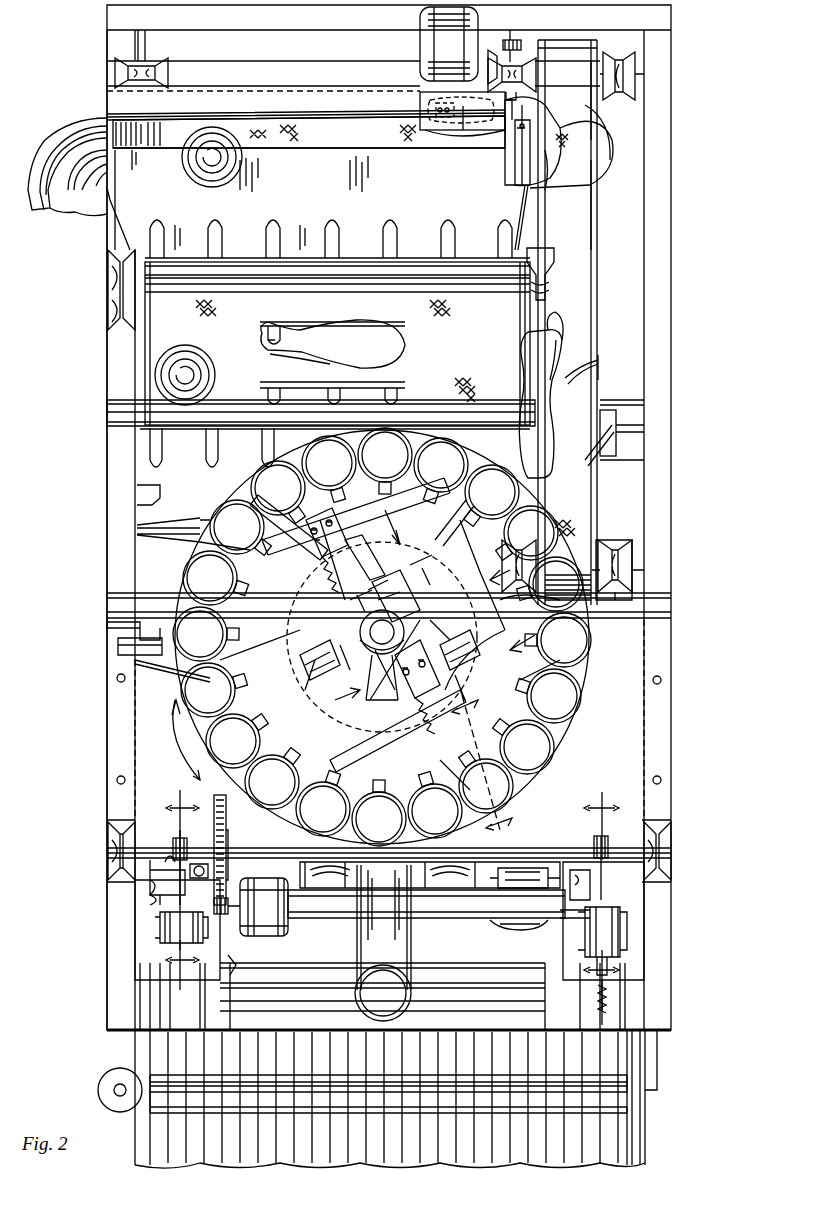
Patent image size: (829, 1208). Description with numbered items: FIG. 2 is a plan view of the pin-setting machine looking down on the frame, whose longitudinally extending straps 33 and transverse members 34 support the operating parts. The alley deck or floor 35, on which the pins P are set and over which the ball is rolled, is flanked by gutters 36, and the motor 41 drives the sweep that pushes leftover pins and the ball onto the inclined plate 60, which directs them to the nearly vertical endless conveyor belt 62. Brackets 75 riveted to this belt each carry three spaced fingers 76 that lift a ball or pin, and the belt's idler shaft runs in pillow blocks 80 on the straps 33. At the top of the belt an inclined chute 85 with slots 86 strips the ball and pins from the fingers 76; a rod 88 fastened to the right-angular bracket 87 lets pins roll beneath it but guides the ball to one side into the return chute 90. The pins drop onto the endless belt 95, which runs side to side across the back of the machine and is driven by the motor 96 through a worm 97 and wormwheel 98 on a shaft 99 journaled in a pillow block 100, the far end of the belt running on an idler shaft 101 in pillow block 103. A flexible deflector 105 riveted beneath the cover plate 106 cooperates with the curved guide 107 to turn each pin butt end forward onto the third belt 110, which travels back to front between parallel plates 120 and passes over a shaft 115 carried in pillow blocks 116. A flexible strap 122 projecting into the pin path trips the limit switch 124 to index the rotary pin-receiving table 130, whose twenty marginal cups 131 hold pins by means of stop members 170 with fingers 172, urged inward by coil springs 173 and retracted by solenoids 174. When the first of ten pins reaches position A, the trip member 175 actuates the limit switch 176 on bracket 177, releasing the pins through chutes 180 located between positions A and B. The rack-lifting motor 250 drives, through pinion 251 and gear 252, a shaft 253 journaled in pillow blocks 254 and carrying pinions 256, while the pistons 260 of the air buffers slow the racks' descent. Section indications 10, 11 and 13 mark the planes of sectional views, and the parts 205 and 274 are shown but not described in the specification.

The section line 10- 10 is at (172, 890).
The section line 11- 11 is at (616, 901).
The section line 13- 13 is at (495, 758).
The longitudinally-extending straps 33 is at (110, 462).
The transverse members 34 is at (110, 415).
The deck or floor 35 is at (405, 1160).
The gutters 36 is at (165, 1145).
The motor 41 is at (98, 1086).
The inclined plate 60 is at (145, 474).
The endless conveyor belt 62 is at (494, 351).
The brackets 75 is at (378, 380).
The fingers 76 is at (276, 384).
The pillow blocks 80 is at (545, 285).
The inclined plate or chute 85 is at (406, 198).
The slots 86 is at (388, 226).
The right angular shaped bracket 87 is at (520, 150).
The inclined rod 88 is at (362, 118).
The return chute 90 is at (72, 210).
The endless belt 95 is at (348, 140).
The motor 96 is at (466, 50).
The worm 97 is at (523, 38).
The wormwheel 98 is at (512, 40).
The shaft 99 is at (497, 56).
The pillow block 100 is at (522, 76).
The shaft 101 is at (140, 60).
The pillow block 103 is at (160, 68).
The flexible metal strap or deflector 105 is at (463, 128).
The bracket or cover plate 106 is at (348, 112).
The curved deflector or guide 107 is at (588, 152).
The third belt 110 is at (595, 298).
The shaft 115 is at (635, 570).
The pillow blocks 116 is at (612, 555).
The parallel plates 120 is at (600, 356).
The flexible strap 122 is at (595, 462).
The limit switch 124 is at (612, 436).
The rotary pin-receiving table 130 is at (562, 730).
The pin-receiving cups 131 is at (430, 490).
The stop members 170 is at (288, 548).
The fingers 172 is at (296, 790).
The coil springs 173 is at (348, 540).
The solenoids 174 is at (385, 570).
The flexible trip member 175 is at (160, 663).
The limit switch 176 is at (118, 646).
The bracket 177 is at (120, 626).
The chutes 180 is at (440, 878).
The bracket 205 is at (518, 928).
The motor 250 is at (264, 935).
The pinion 251 is at (210, 915).
The gear 252 is at (226, 818).
The shaft 253 is at (640, 843).
The pillow blocks 254 is at (112, 853).
The pinions 256 is at (178, 840).
The pistons 260 is at (548, 875).
The housing 274 is at (140, 933).
The position A is at (195, 688).
The position B is at (193, 178).
The pin P is at (344, 330).